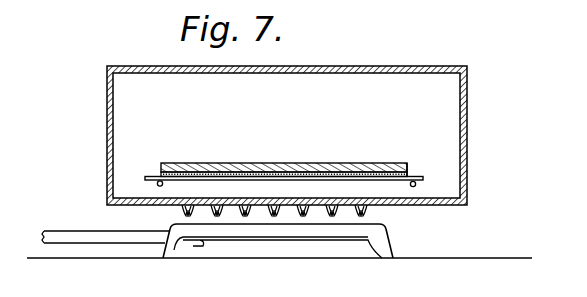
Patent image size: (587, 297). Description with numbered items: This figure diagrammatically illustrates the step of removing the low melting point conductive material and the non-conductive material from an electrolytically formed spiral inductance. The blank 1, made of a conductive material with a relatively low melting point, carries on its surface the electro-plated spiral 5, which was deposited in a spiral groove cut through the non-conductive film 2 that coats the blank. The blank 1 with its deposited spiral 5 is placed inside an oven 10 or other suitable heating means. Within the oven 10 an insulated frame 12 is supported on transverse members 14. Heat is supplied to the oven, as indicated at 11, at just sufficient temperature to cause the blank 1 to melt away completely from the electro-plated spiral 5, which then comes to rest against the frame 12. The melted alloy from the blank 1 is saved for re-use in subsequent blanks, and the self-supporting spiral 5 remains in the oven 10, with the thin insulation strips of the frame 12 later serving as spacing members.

The oven 10 is at (468, 99).
The blank 1 is at (340, 165).
The spiral inductance 5 is at (322, 171).
The film of non-conductive material 2 is at (391, 164).
The insulated frame 12 is at (150, 164).
The transverse members 14 is at (157, 186).
The heat supply 11 is at (315, 230).